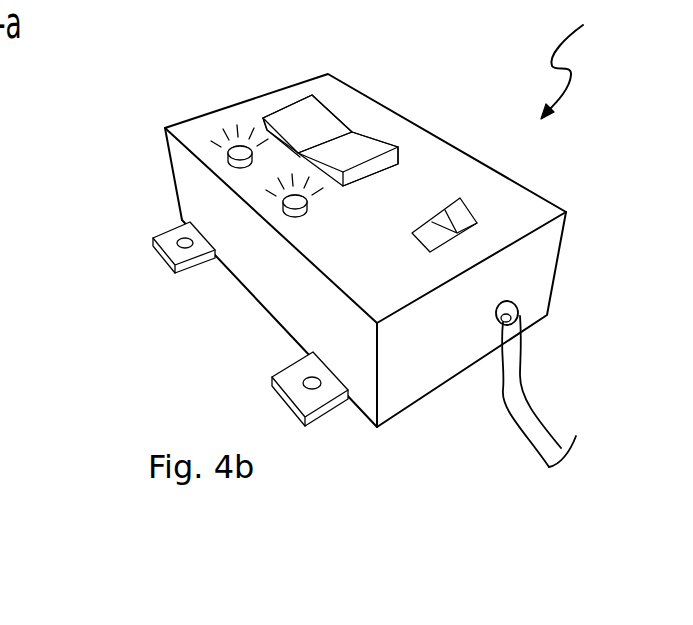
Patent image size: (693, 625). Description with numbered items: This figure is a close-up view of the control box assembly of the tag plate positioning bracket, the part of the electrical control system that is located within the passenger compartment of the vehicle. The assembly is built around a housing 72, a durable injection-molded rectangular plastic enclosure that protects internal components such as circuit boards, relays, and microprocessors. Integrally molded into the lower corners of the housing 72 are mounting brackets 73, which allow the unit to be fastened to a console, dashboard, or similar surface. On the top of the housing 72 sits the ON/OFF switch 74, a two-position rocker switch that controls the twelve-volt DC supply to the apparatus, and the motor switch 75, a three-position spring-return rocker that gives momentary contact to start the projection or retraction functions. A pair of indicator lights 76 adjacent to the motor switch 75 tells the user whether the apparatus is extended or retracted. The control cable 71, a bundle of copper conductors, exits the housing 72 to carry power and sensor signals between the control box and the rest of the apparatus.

The control cable 71 is at (537, 420).
The housing 72 is at (177, 178).
The mounting brackets 73 is at (278, 394).
The ON/OFF switch 74 is at (445, 207).
The motor switch 75 is at (335, 107).
The indicator lights 76 is at (238, 163).